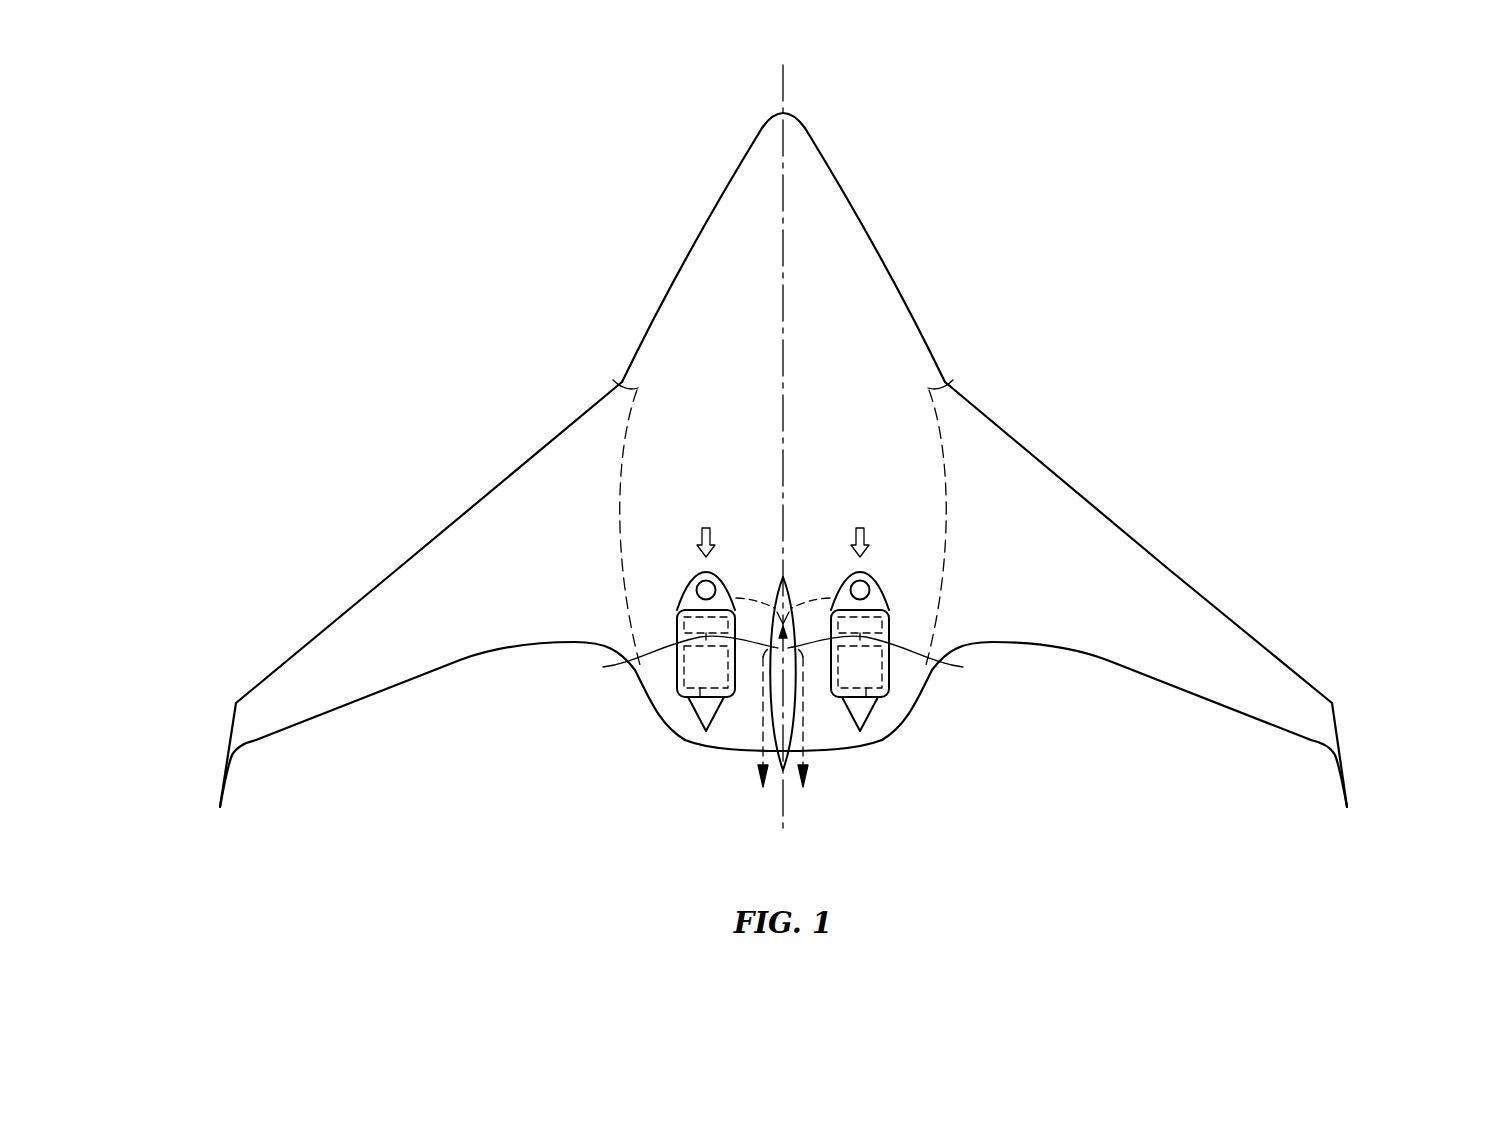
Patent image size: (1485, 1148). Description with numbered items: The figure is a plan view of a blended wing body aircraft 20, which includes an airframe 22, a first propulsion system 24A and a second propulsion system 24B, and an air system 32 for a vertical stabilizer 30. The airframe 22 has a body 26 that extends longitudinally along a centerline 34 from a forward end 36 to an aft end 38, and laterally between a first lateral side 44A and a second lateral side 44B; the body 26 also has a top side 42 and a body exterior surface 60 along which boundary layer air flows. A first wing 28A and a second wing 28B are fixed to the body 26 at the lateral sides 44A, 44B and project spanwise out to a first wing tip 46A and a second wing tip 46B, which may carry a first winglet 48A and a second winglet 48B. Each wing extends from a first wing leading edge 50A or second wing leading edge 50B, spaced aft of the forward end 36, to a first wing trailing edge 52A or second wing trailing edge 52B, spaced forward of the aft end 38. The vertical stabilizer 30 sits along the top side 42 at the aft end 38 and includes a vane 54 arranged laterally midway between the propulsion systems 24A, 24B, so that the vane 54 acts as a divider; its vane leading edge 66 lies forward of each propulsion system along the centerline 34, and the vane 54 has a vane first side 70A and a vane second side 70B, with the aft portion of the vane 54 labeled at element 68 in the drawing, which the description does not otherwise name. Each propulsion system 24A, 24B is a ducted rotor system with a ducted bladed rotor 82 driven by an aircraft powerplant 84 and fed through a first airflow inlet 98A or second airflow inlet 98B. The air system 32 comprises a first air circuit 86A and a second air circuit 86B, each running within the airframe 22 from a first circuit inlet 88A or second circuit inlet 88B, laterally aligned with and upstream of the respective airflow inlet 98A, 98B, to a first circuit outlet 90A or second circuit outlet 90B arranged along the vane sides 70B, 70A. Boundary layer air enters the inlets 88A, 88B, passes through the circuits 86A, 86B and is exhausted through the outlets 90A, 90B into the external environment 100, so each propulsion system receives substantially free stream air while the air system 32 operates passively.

The blended wing body aircraft 20 is at (1256, 134).
The external environment 100 is at (447, 266).
The airframe 22 is at (888, 287).
The first propulsion system 24A is at (894, 665).
The second propulsion system 24B is at (672, 665).
The body 26 is at (678, 287).
The first wing 28A is at (1146, 530).
The second wing 28B is at (420, 530).
The vertical stabilizer 30 is at (800, 585).
The vane 54 is at (783, 632).
The air system 32 is at (755, 575).
The centerline 34 is at (783, 307).
The forward end 36 is at (785, 111).
The aft end 38 is at (855, 752).
The top side 42 is at (849, 424).
The first lateral side 44A is at (946, 378).
The second lateral side 44B is at (620, 378).
The first wing tip 46A is at (1332, 702).
The second wing tip 46B is at (234, 702).
The first winglet 48A is at (1354, 772).
The second winglet 48B is at (212, 772).
The first wing leading edge 50A is at (1214, 598).
The second wing leading edge 50B is at (352, 598).
The first wing trailing edge 52A is at (1166, 677).
The second wing trailing edge 52B is at (398, 675).
The body exterior surface 60 is at (896, 535).
The vane leading edge 66 is at (781, 574).
The exhaust nozzle 68 is at (783, 771).
The vane first side 70A is at (789, 725).
The vane second side 70B is at (777, 725).
The ducted bladed rotor 82 is at (680, 632).
The aircraft powerplant 84 is at (697, 703).
The first air circuit 86A is at (829, 597).
The second air circuit 86B is at (737, 597).
The first circuit inlet 88A is at (870, 577).
The second circuit inlet 88B is at (697, 577).
The first circuit outlet 90A is at (667, 659).
The second circuit outlet 90B is at (899, 659).
The first airflow inlet 98A is at (880, 597).
The second airflow inlet 98B is at (686, 597).